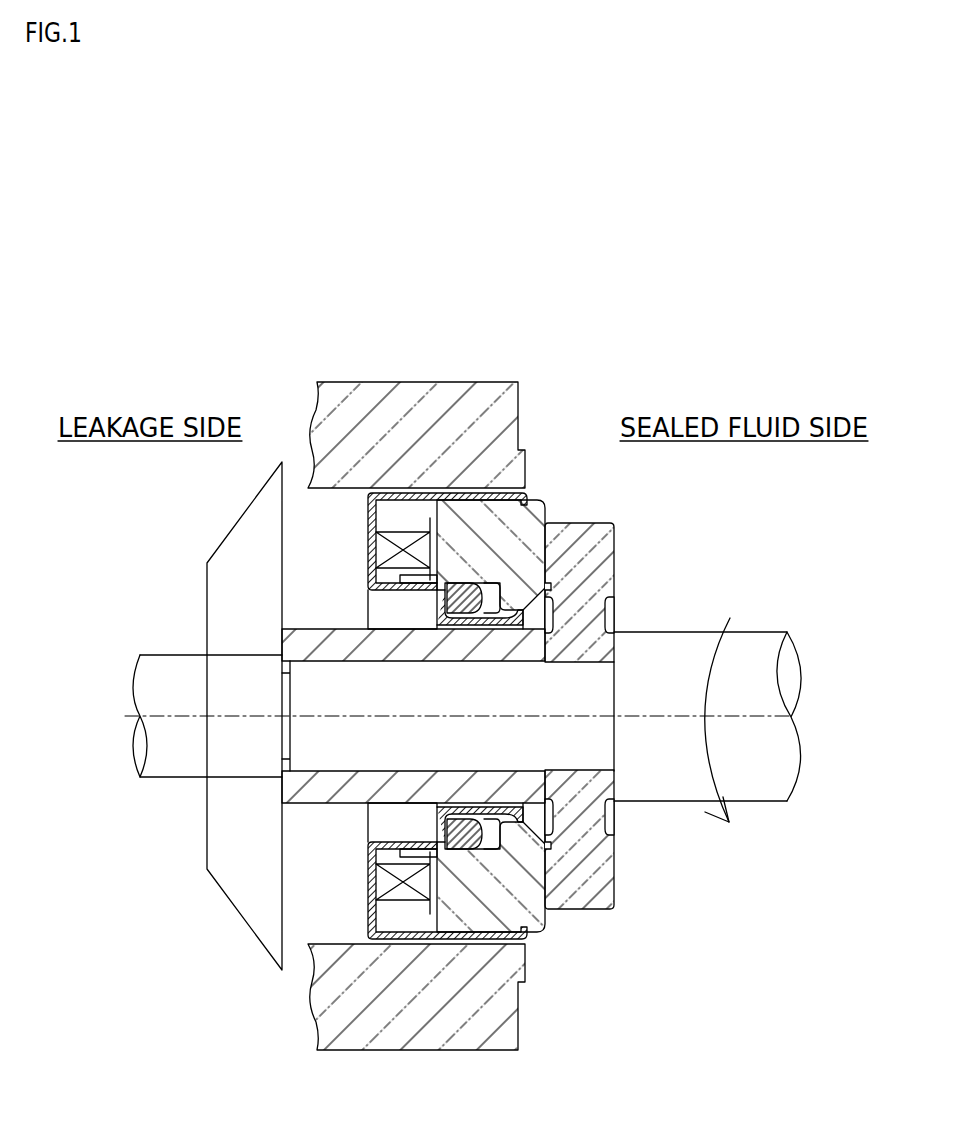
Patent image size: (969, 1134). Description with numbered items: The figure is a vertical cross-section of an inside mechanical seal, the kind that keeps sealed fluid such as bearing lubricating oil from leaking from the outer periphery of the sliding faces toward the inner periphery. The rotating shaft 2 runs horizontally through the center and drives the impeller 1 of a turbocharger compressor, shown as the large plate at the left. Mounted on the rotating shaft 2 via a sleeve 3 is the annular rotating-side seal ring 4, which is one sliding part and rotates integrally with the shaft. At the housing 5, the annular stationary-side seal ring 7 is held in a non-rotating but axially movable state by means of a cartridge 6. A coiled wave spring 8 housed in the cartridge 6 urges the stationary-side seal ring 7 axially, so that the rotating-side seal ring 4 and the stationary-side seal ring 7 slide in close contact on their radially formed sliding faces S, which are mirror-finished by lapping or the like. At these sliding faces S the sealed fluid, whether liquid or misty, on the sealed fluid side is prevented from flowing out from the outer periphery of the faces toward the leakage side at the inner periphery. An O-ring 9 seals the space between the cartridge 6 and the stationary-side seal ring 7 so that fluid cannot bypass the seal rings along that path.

The impeller 1 is at (237, 557).
The rotating shaft 2 is at (509, 704).
The sleeve 3 is at (303, 642).
The rotating-side seal ring 4 is at (615, 543).
The housing 5 is at (396, 400).
The cartridge 6 is at (368, 521).
The stationary-side seal ring 7 is at (537, 540).
The coiled wave spring 8 is at (400, 547).
The O-ring 9 is at (447, 600).
The sliding face S is at (495, 520).